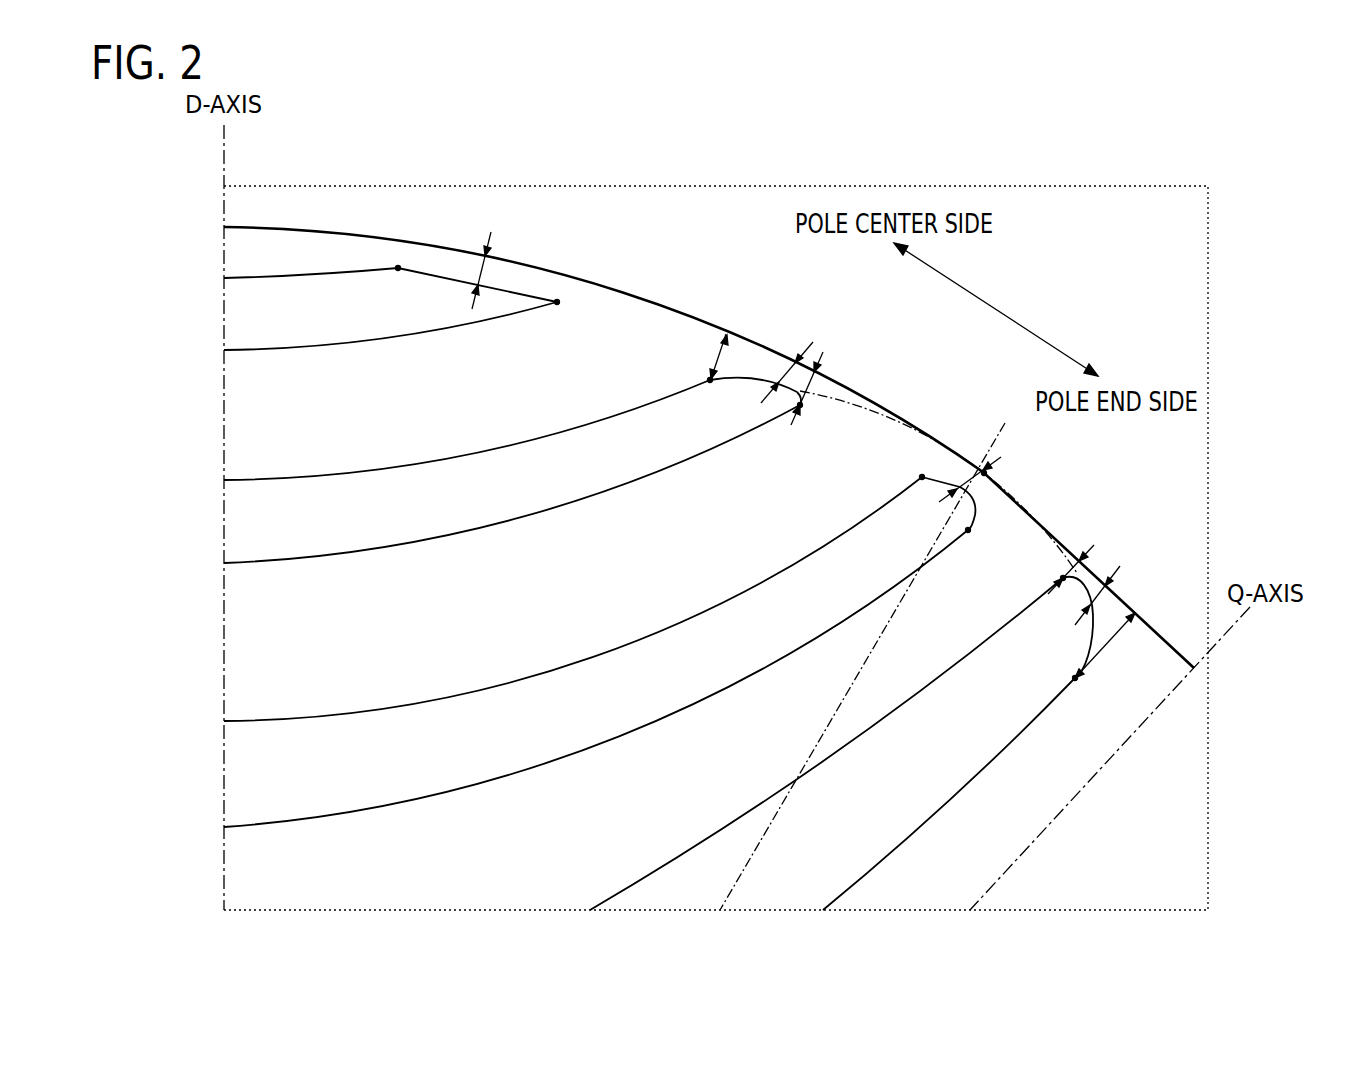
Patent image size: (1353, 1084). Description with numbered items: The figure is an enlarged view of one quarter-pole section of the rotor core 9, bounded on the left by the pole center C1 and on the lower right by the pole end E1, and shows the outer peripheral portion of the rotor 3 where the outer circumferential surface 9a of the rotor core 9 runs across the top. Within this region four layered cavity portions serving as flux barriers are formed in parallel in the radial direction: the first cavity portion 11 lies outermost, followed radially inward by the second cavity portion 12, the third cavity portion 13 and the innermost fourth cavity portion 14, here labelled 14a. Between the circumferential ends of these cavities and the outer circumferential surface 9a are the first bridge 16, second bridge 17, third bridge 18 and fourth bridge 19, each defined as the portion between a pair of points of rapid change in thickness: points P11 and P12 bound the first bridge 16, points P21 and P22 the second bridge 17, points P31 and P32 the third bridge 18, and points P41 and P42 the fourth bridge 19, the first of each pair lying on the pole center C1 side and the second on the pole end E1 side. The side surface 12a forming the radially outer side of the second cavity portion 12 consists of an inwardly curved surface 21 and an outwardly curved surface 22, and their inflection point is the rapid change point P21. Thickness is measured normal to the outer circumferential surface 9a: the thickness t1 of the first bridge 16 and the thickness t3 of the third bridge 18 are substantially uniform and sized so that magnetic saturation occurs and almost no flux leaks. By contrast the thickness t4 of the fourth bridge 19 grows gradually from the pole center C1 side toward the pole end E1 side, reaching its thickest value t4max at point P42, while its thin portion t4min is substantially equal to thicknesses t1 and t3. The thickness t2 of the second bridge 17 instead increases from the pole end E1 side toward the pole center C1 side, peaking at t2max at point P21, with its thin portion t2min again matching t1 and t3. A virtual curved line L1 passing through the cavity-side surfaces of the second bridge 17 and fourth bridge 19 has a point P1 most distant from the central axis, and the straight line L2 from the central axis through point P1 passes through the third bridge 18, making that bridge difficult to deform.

The rotor core 3 is at (709, 401).
The rotor core 9 is at (709, 401).
The outer circumferential surface 9a is at (627, 291).
The first cavity portion 11 is at (401, 241).
The second cavity portion 12 is at (490, 434).
The side surface 12a is at (490, 434).
The third cavity portion 13 is at (627, 595).
The fourth cavity portion 14 is at (889, 720).
The fourth slot portion 14a is at (889, 720).
The first bridge 16 is at (435, 243).
The second bridge 17 is at (781, 389).
The third bridge 18 is at (963, 485).
The fourth bridge 19 is at (1092, 590).
The inwardly curved surface 21 is at (476, 456).
The outwardly curved surface 22 is at (733, 380).
The point of rapid change in thickness P11 is at (398, 266).
The point of rapid change in thickness P12 is at (557, 300).
The point of rapid change in thickness P21 is at (708, 380).
The point of rapid change in thickness P22 is at (798, 412).
The point of rapid change in thickness P31 is at (921, 474).
The point of rapid change in thickness P32 is at (968, 534).
The point of rapid change in thickness P41 is at (1062, 578).
The point of rapid change in thickness P42 is at (1074, 682).
The point on the imaginary curved line P1 is at (987, 471).
The thickness of the first bridge t1 is at (470, 262).
The thickness of the second bridge t2 is at (796, 340).
The maximum thickness of the second bridge t2max is at (717, 352).
The thin portion of the second bridge t2min is at (800, 418).
The thickness of the third bridge t3 is at (970, 486).
The thickness of the fourth bridge t4 is at (1102, 594).
The thin portion of the fourth bridge t4min is at (1078, 563).
The maximum thickness of the fourth bridge t4max is at (1105, 642).
The virtual curved line L1 is at (950, 440).
The straight line L2 is at (1005, 423).
The pole center C1 is at (225, 155).
The pole end E1 is at (1230, 628).